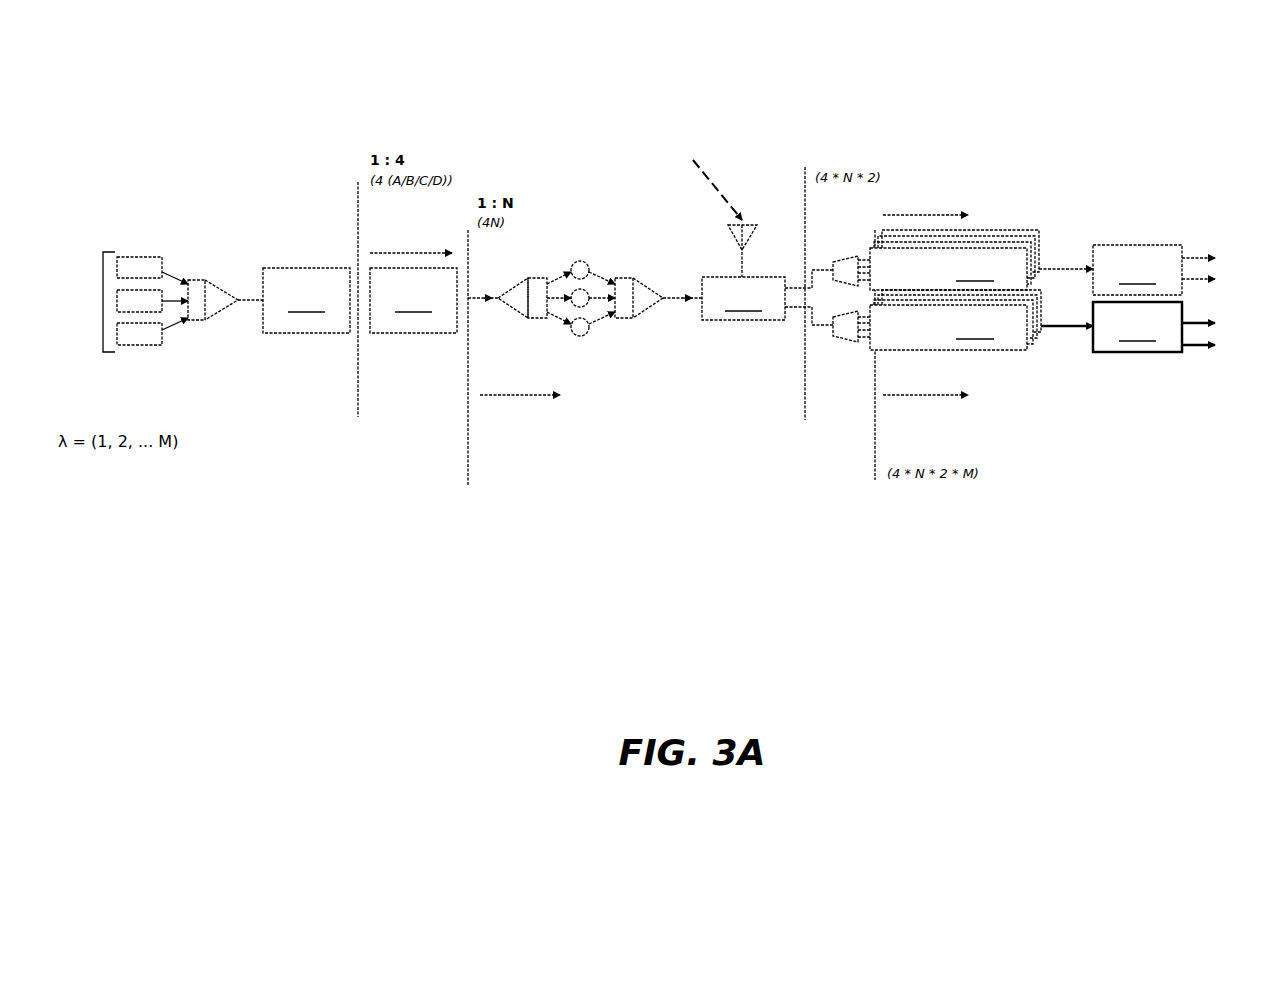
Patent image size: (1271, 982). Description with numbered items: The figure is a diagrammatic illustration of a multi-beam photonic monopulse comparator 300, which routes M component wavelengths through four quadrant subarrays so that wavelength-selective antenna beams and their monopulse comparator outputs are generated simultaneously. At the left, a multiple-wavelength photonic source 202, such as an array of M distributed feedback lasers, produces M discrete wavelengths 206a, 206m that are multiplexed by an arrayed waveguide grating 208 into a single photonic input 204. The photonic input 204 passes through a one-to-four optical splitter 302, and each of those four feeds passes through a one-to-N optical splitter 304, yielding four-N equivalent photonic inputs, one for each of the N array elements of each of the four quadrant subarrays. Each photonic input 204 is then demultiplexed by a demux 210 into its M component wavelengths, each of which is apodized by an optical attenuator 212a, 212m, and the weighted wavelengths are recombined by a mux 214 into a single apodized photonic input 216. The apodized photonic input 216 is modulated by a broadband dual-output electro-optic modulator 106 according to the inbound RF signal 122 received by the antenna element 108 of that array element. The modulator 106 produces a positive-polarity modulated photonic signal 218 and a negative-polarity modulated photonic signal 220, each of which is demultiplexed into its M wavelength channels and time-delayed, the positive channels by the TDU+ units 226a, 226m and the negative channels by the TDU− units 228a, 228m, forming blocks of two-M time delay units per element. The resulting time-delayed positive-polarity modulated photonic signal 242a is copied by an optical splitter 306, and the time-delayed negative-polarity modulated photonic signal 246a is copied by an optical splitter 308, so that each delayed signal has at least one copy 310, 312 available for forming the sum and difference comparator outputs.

The multi-beam photonic monopulse comparator 300 is at (103, 90).
The multiple-wavelength photonic source 202 is at (103, 300).
The first discrete wavelength 206a is at (168, 268).
The Mth discrete wavelength 206m is at (167, 332).
The arrayed waveguide grating 208 is at (222, 287).
The 1:4 optical splitter 302 is at (306, 300).
The 1:N optical splitter 304 is at (413, 300).
The photonic input 204 is at (476, 300).
The demux 210 is at (523, 290).
The first optical attenuator 212a is at (575, 265).
The Mth optical attenuator 212m is at (577, 333).
The mux 214 is at (645, 303).
The apodized photonic input 216 is at (680, 297).
The broadband DO-EOM 106 is at (743, 298).
The antenna element 108 is at (733, 233).
The inbound RF signal 122 is at (713, 177).
The positive-polarity modulated photonic signal 218 is at (800, 287).
The negative-polarity modulated photonic signal 220 is at (795, 313).
The first TDU+ 226a is at (948, 269).
The Mth TDU+ 226m is at (1028, 236).
The first TDU− 228a is at (948, 327).
The Mth TDU− 228m is at (1062, 308).
The time-delayed positive-polarity modulated photonic signal 242a is at (1073, 267).
The time-delayed negative-polarity modulated photonic signal 246a is at (1057, 331).
The optical splitter 306 is at (1137, 270).
The optical splitter 308 is at (1137, 327).
The copy of time-delayed positive-polarity signal 310 is at (1213, 279).
The copy of time-delayed negative-polarity signal 312 is at (1188, 323).